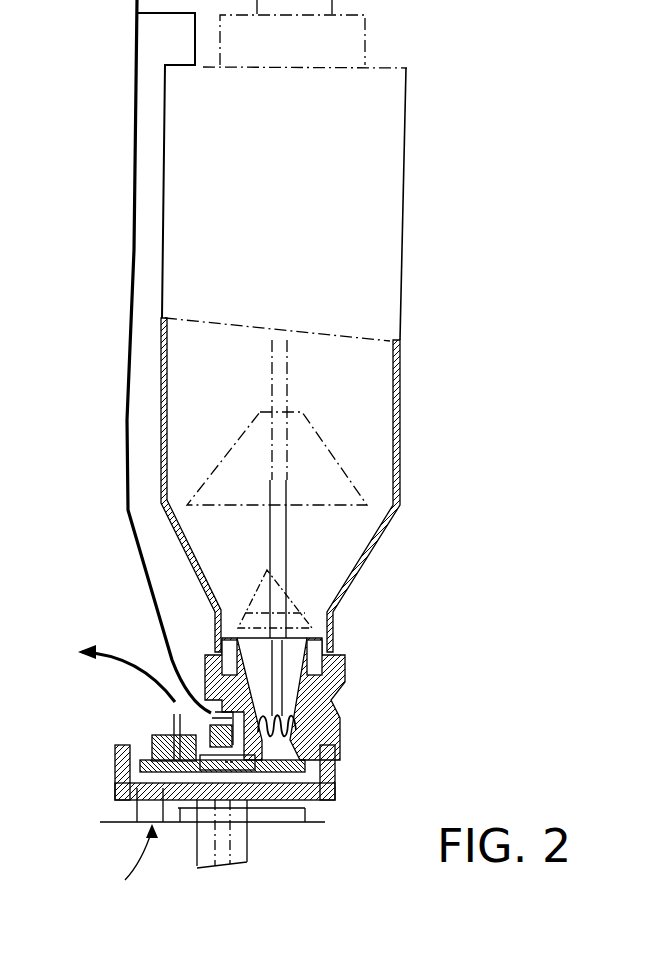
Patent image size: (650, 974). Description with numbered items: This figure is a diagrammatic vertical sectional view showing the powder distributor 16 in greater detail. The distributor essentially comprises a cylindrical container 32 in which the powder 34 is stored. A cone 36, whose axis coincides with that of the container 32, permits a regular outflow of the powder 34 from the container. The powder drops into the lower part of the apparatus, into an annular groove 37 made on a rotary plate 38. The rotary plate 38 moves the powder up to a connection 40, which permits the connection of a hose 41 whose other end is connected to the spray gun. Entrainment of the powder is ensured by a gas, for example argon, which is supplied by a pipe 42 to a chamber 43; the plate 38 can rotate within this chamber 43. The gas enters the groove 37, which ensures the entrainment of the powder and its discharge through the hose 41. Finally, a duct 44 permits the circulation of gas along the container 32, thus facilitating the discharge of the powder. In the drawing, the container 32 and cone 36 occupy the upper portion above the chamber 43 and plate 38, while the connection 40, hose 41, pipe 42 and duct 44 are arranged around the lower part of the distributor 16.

The powder distributor 16 is at (434, 409).
The cylindrical container 32 is at (402, 232).
The powder 34 is at (342, 337).
The cone 36 is at (348, 472).
The annular groove 37 is at (318, 795).
The rotary plate 38 is at (305, 770).
The connection 40 is at (152, 738).
The hose 41 is at (118, 652).
The pipe 42 is at (142, 858).
The chamber 43 is at (142, 773).
The duct 44 is at (129, 410).